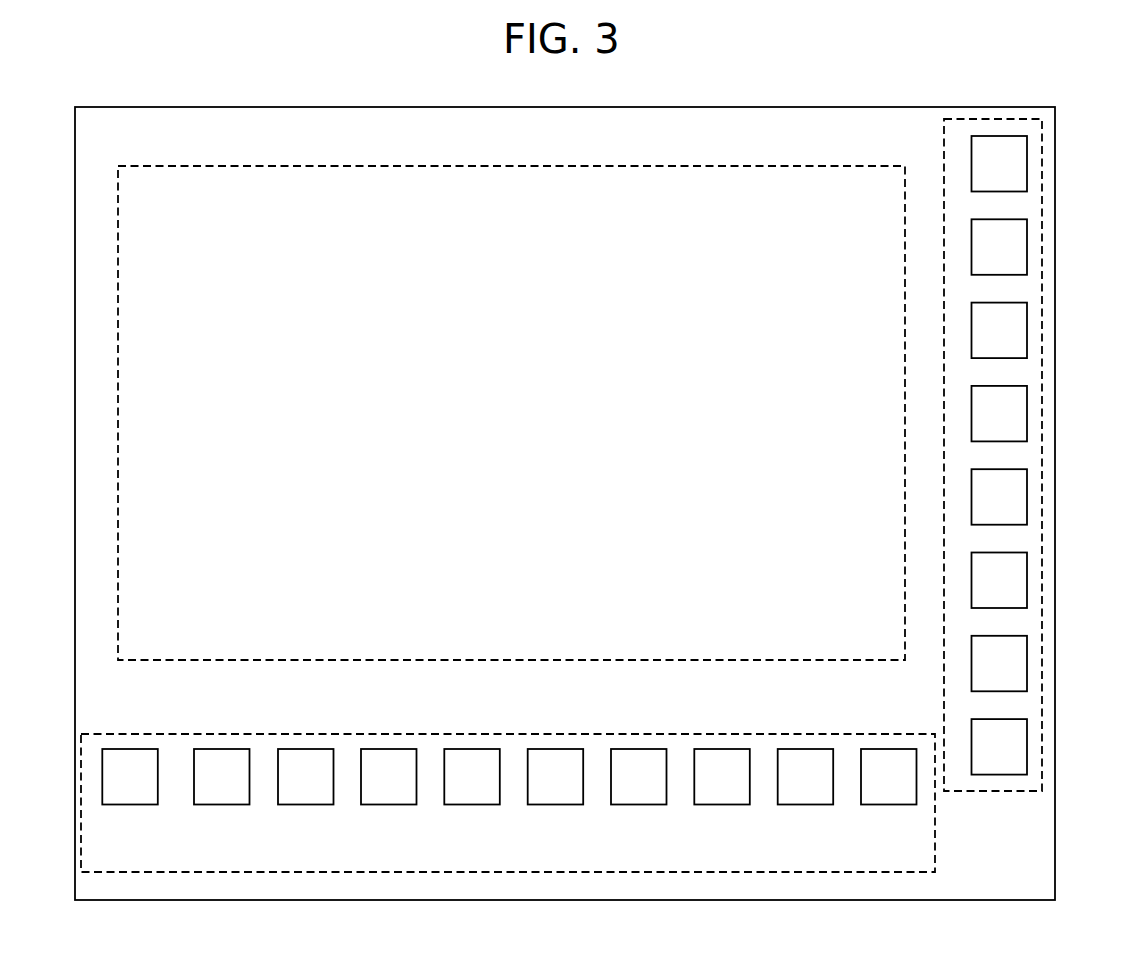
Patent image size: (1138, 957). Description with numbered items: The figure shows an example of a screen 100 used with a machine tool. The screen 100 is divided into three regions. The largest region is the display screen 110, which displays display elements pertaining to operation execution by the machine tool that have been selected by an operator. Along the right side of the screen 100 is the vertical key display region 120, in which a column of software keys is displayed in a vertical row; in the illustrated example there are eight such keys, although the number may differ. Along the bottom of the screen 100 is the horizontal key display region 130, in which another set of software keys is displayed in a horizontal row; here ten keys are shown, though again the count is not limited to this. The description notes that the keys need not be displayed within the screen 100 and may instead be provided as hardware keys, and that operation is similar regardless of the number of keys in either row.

The screen 100 is at (630, 107).
The display screen 110 is at (500, 166).
The vertical key display region 120 is at (991, 791).
The horizontal key display region 130 is at (81, 782).